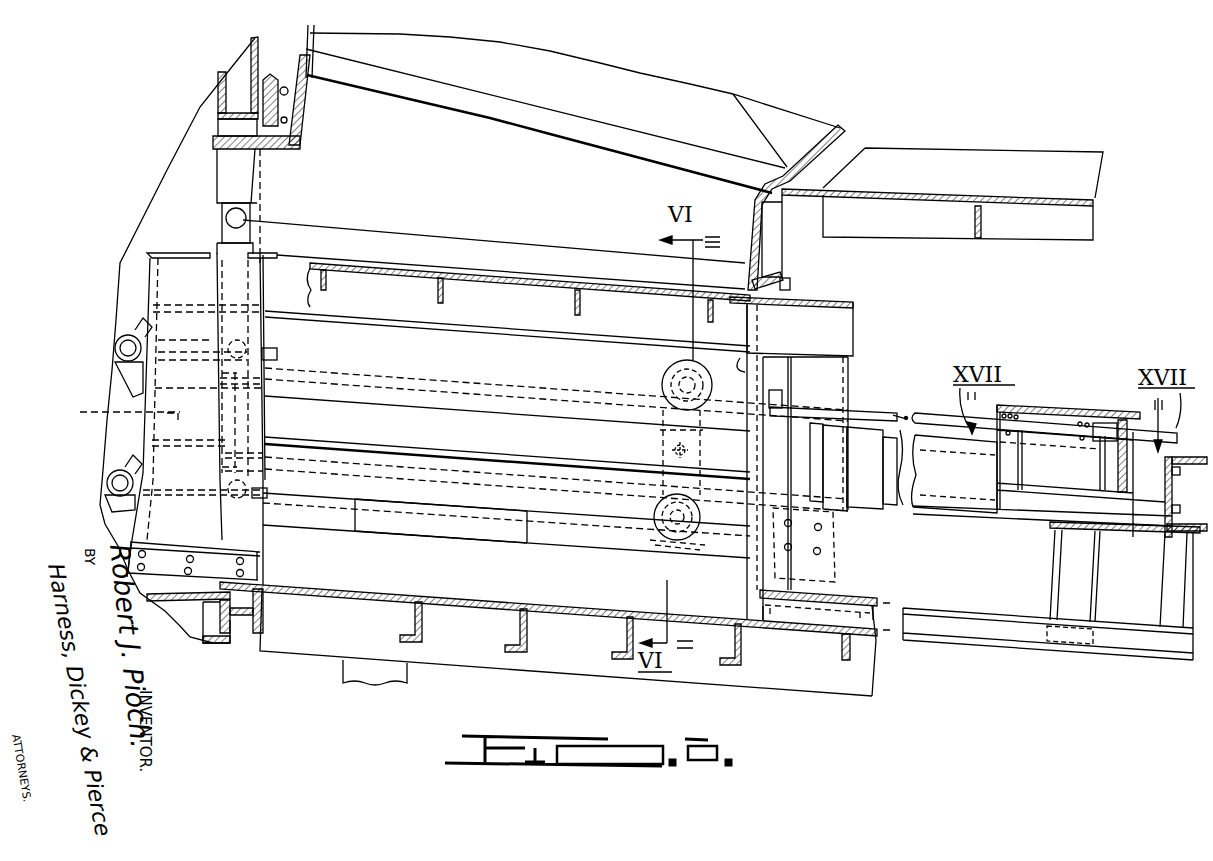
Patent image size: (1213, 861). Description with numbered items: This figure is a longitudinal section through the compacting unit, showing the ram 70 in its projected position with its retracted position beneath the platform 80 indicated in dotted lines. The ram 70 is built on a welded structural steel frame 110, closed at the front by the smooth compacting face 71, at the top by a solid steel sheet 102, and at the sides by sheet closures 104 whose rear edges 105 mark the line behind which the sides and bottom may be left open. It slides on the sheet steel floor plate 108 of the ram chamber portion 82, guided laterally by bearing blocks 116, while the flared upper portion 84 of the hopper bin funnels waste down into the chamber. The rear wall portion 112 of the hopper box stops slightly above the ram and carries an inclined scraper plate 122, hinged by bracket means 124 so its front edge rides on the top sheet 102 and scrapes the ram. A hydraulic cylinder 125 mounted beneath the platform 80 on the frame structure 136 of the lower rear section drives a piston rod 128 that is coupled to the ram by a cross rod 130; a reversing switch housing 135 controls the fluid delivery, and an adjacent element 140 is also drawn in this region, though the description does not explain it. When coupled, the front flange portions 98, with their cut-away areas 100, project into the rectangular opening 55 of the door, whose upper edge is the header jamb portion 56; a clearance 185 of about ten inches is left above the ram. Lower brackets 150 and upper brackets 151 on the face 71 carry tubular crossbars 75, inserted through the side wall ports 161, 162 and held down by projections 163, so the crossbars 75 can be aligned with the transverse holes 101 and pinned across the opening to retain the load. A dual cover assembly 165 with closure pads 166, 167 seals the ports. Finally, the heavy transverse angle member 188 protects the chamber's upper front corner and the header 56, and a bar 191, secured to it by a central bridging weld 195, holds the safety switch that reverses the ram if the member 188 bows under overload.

The rectangular opening 55 is at (225, 125).
The header jamb portion 56 is at (243, 110).
The ram 70 is at (158, 245).
The front compacting face 71 is at (150, 266).
The crossbar 75 is at (114, 340).
The platform 80 is at (825, 186).
The ram chamber portion 82 is at (563, 223).
The hopper bin upper portion 84 is at (837, 140).
The flange portions 98 is at (237, 155).
The cut-away areas 100 is at (253, 208).
The aligned holes 101 is at (226, 218).
The top sheet 102 is at (403, 250).
The side sheet closures 104 is at (167, 290).
The rear edges of side plates 105 is at (262, 541).
The floor plate 108 is at (475, 600).
The structural steel frame 110 is at (490, 337).
The rear wall portion 112 is at (763, 250).
The lateral bearing blocks 116 is at (257, 572).
The scraper plate 122 is at (790, 290).
The bracket means 124 is at (783, 277).
The hydraulic cylinder 125 is at (975, 478).
The piston rod 128 is at (535, 450).
The cross rod 130 is at (102, 410).
The reversing switch housing 135 is at (1100, 397).
The frame structure 136 is at (1053, 556).
The rod 140 is at (932, 412).
The lower brackets 150 is at (105, 505).
The upper brackets 151 is at (115, 368).
The lower port 161 is at (648, 541).
The upper port 162 is at (662, 380).
The projections 163 is at (113, 457).
The dual cover assembly 165 is at (672, 431).
The closure pad 166 is at (655, 511).
The closure pad 167 is at (708, 362).
The clearance 185 is at (282, 187).
The transverse angle member 188 is at (300, 135).
The bar 191 is at (313, 40).
The bridging weld 195 is at (289, 91).